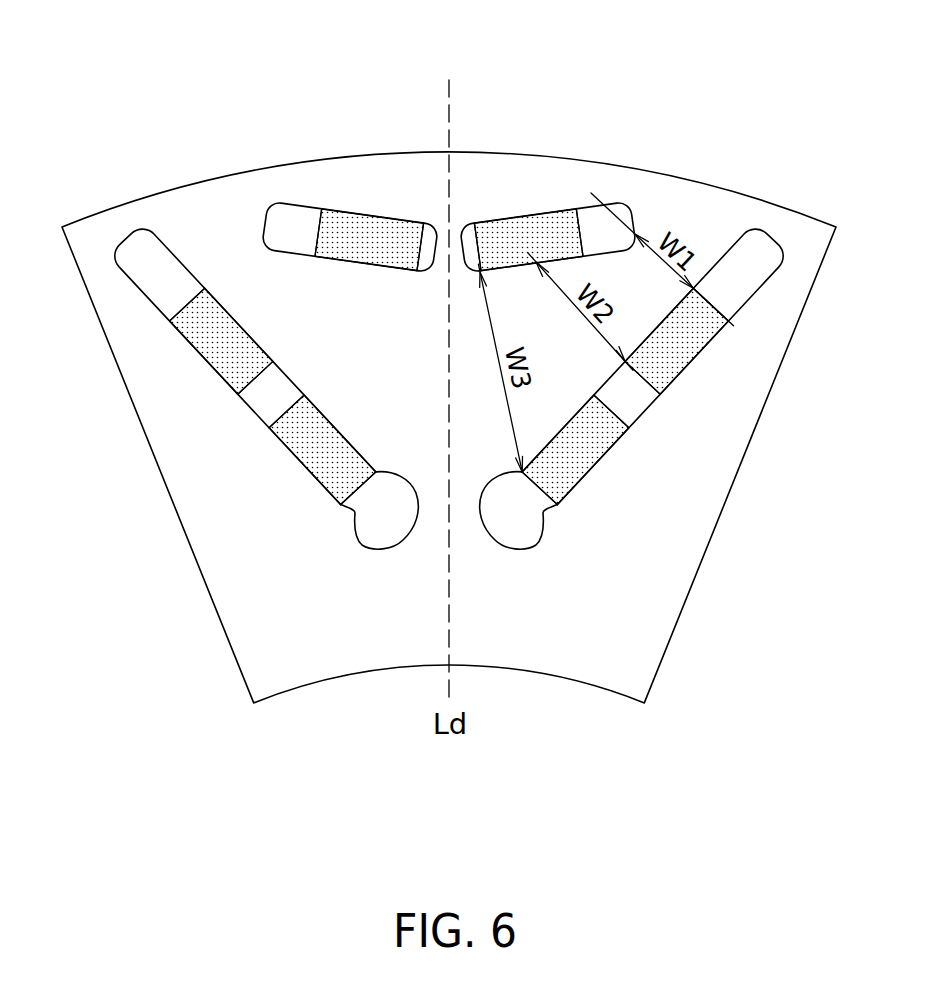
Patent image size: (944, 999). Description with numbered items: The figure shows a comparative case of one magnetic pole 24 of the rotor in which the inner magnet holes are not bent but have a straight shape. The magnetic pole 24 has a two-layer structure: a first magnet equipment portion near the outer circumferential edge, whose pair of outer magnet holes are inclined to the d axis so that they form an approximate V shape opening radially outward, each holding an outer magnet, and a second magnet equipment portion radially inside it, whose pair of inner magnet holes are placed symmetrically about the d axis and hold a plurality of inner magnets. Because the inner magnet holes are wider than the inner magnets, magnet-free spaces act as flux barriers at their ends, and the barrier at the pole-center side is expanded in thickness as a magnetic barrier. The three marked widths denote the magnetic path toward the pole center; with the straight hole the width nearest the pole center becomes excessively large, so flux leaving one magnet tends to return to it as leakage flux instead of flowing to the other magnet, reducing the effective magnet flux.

The magnetic pole 24 is at (180, 64).